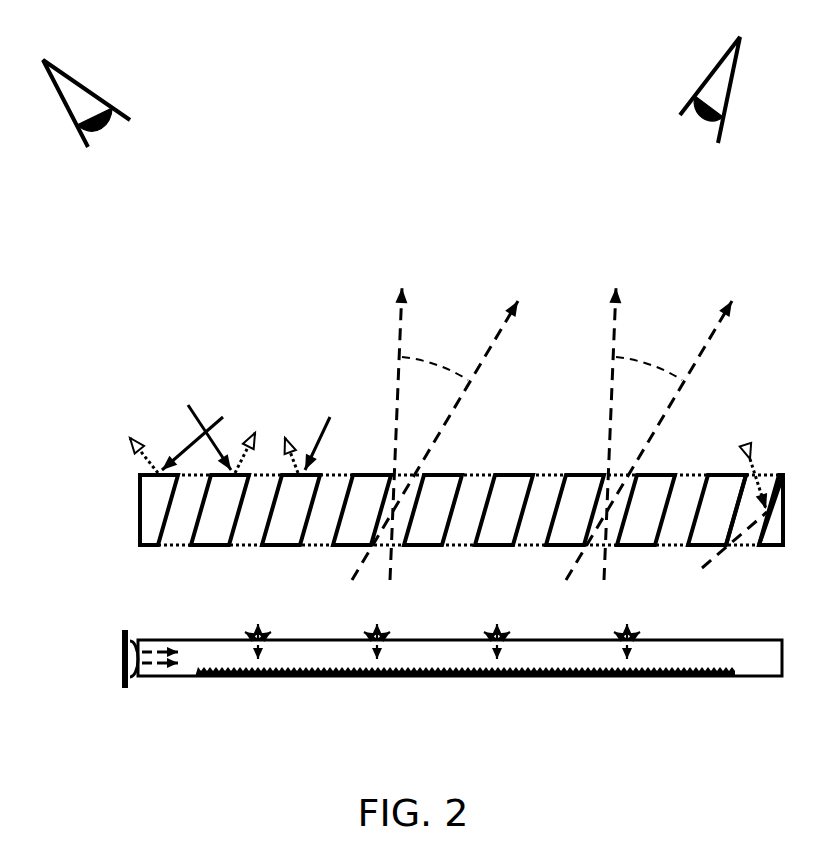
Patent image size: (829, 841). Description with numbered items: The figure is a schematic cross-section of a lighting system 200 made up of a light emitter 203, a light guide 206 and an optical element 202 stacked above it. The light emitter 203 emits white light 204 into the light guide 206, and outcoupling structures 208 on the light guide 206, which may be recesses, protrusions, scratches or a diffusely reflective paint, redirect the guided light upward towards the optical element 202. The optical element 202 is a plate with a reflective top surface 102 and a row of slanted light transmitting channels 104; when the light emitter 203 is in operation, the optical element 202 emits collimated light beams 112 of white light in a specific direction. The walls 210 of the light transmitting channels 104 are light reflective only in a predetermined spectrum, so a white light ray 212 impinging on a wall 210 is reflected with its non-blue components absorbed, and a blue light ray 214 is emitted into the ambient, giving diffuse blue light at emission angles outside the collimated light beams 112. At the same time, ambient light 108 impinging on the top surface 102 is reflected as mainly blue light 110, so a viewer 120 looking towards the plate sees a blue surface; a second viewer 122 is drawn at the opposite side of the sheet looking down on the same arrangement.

The top surface 102 is at (136, 470).
The light transmitting channel 104 is at (250, 530).
The ambient light 108 is at (197, 415).
The blue light 110 is at (142, 430).
The collimated light beam 112 is at (433, 362).
The viewer 120 is at (75, 82).
The second viewer 122 is at (712, 73).
The lighting system 200 is at (406, 709).
The optical element 202 is at (415, 509).
The light emitter 203 is at (122, 655).
The white light 204 is at (158, 667).
The light guide 206 is at (540, 657).
The outcoupling structures 208 is at (600, 678).
The wall 210 is at (768, 528).
The white light ray 212 is at (713, 560).
The blue light ray 214 is at (752, 450).